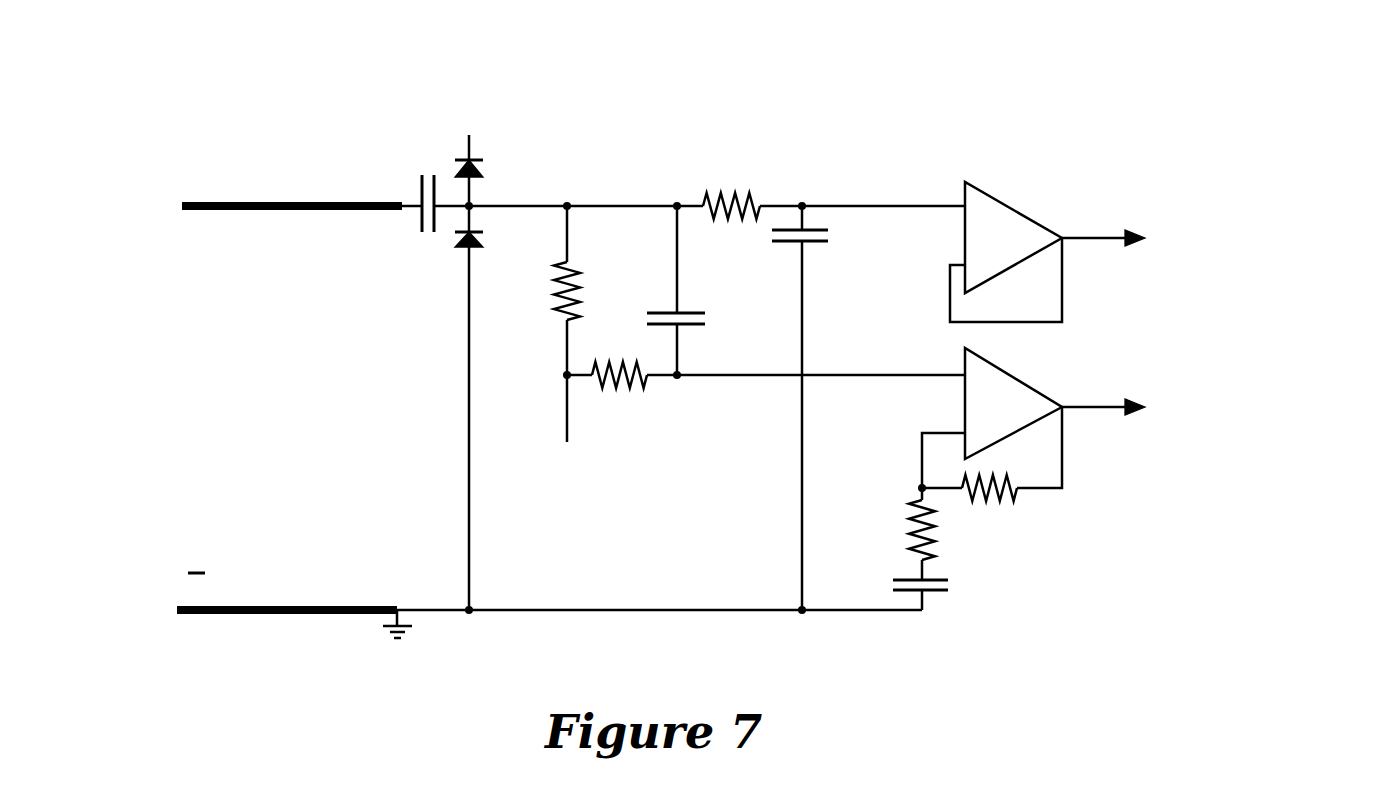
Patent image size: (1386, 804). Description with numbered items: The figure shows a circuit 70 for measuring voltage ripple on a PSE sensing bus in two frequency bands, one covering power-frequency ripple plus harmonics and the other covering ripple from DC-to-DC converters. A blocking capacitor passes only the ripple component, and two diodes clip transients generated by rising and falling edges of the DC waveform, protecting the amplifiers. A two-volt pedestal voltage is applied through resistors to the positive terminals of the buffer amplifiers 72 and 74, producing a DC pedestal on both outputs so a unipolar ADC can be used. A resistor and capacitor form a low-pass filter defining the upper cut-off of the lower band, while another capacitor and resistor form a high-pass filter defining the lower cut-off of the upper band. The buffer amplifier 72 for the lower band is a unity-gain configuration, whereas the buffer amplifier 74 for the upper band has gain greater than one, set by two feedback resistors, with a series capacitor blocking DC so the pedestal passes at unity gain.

The circuit 70 is at (195, 132).
The buffer amplifier 72 is at (1003, 202).
The buffer amplifier 74 is at (1020, 393).